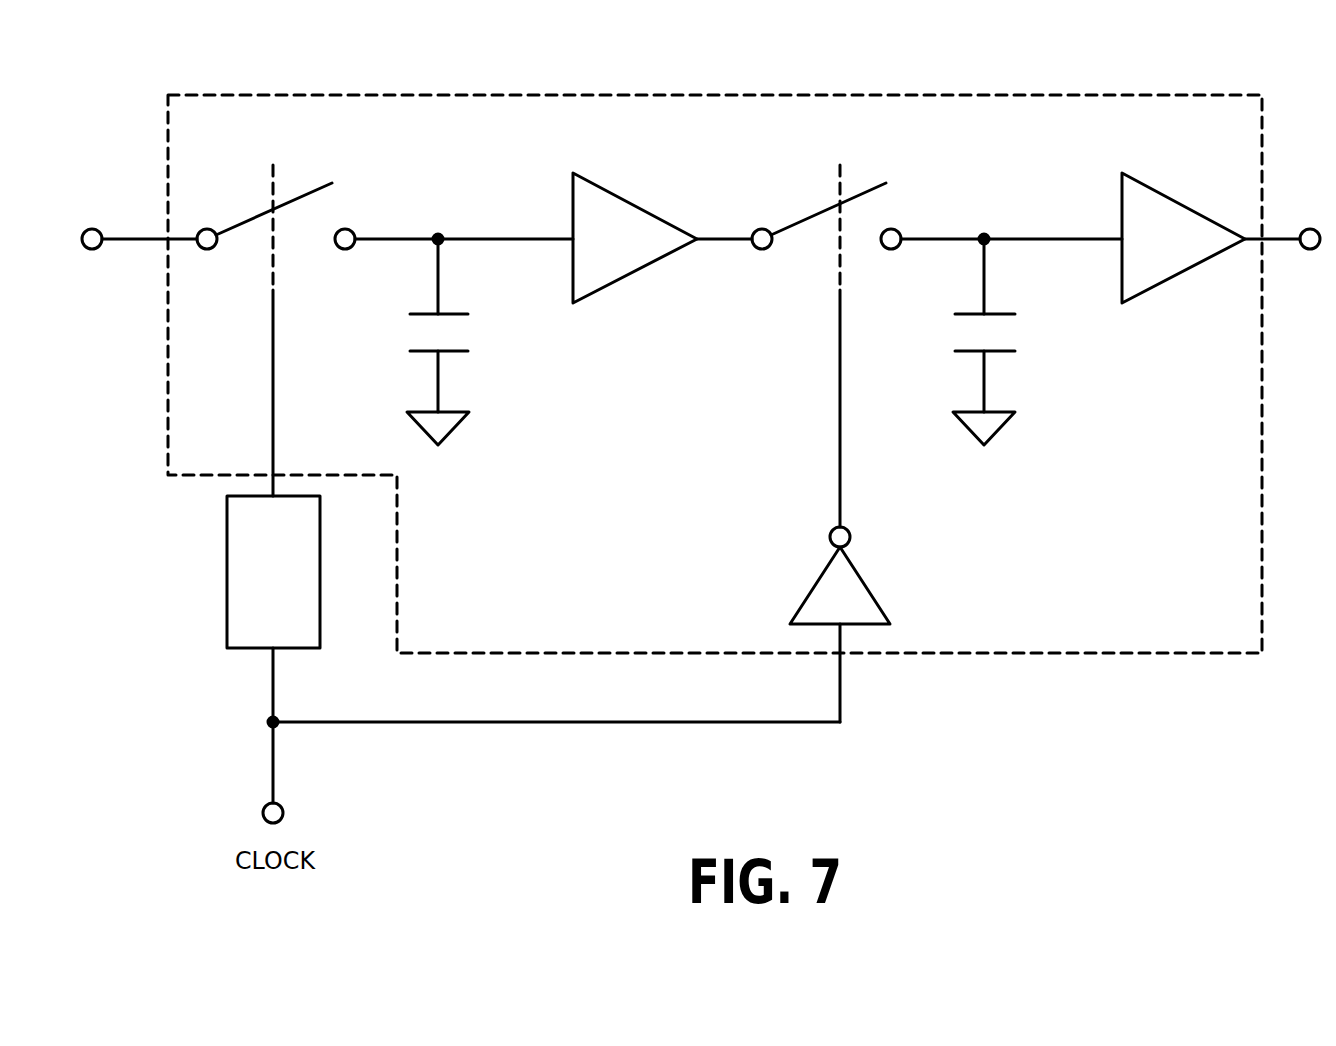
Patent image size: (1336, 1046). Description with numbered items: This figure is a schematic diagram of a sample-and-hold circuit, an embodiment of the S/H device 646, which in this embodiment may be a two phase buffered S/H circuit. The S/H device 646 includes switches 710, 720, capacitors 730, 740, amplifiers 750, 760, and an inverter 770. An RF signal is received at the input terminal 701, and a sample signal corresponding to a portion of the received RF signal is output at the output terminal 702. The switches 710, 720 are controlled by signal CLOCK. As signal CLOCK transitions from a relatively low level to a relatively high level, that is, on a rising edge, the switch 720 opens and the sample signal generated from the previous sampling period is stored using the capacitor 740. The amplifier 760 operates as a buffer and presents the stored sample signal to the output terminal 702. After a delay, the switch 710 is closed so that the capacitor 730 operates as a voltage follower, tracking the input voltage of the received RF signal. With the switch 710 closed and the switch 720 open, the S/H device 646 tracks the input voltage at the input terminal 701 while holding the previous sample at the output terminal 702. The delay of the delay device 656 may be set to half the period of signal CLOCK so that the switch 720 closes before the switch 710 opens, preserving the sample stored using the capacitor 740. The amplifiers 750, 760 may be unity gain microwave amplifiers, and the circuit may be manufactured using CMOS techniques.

The S/H device 646 is at (713, 95).
The delay device 656 is at (225, 598).
The input terminal 701 is at (92, 250).
The output terminal 702 is at (1310, 250).
The switch 710 is at (337, 200).
The switch 720 is at (883, 200).
The capacitor 730 is at (482, 330).
The capacitor 740 is at (1027, 330).
The amplifier 750 is at (627, 193).
The amplifier 760 is at (1173, 192).
The inverter 770 is at (863, 577).